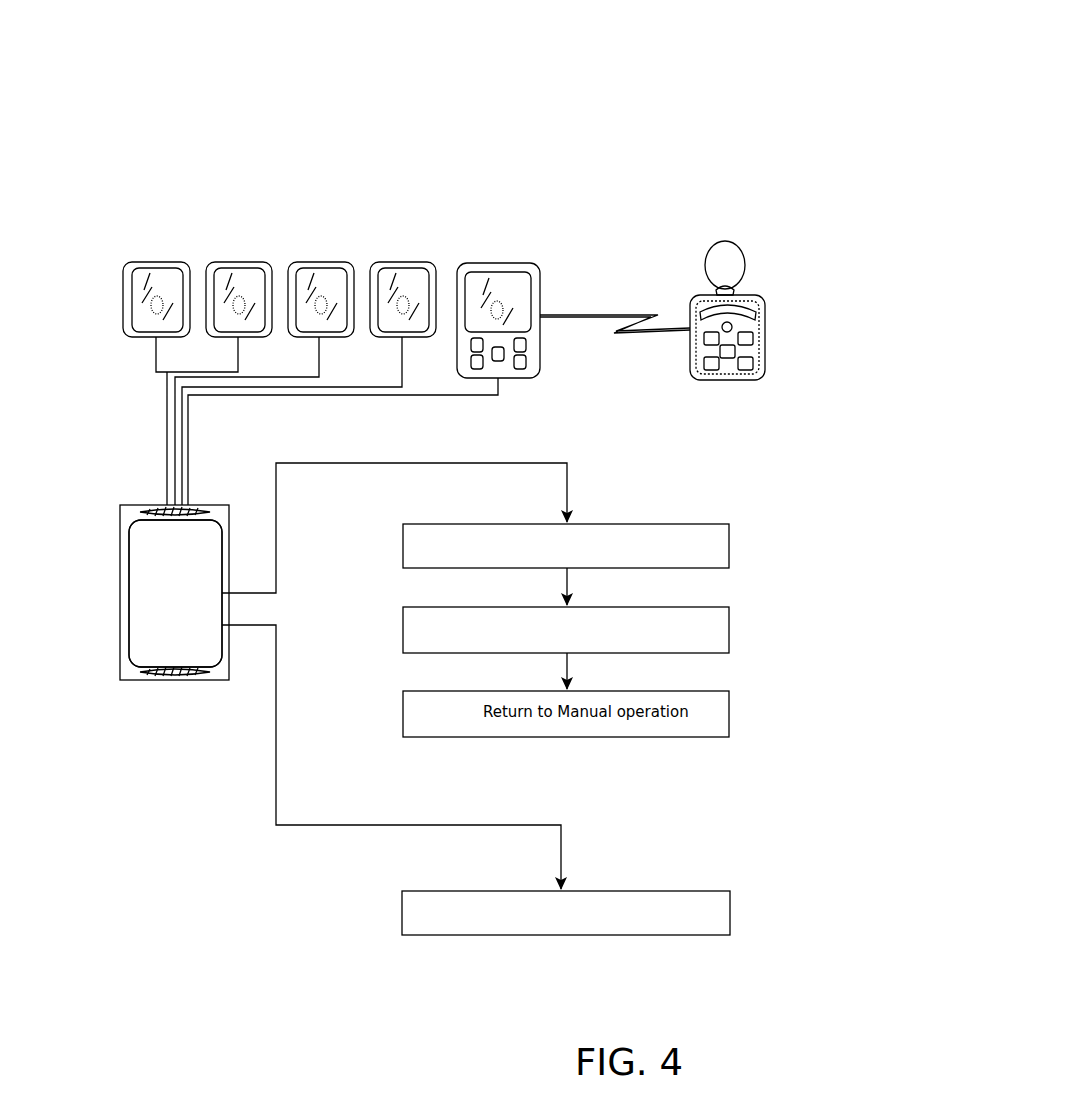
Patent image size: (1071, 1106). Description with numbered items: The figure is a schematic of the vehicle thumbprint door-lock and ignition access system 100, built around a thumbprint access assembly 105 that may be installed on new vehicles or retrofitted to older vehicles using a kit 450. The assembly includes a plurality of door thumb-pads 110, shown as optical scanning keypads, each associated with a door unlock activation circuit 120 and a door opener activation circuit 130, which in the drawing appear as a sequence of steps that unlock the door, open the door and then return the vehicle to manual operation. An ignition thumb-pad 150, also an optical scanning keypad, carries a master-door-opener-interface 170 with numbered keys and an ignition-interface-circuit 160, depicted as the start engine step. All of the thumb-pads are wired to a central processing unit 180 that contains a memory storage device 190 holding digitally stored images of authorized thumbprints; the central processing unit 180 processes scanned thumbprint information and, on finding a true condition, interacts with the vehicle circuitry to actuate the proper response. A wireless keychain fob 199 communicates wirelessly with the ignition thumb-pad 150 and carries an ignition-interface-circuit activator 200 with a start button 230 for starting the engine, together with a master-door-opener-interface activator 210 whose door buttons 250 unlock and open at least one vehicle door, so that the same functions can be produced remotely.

The vehicle thumbprint door-lock and ignition access system 100 is at (562, 70).
The thumbprint access assembly 105 is at (588, 116).
The kit 450 is at (613, 166).
The door thumb-pad 110 is at (152, 256).
The ignition thumb-pad 150 is at (547, 319).
The door buttons 250 is at (532, 345).
The master-door-opener-interface 170 is at (505, 366).
The central processing unit 180 is at (125, 551).
The memory storage device 190 is at (125, 593).
The ignition-interface-circuit activator 200 is at (748, 302).
The start button 230 is at (763, 314).
The master-door-opener-interface activator 210 is at (770, 350).
The wireless keychain fob 199 is at (773, 342).
The door unlock activation circuit 120 is at (566, 546).
The door opener activation circuit 130 is at (566, 630).
The ignition-interface-circuit 160 is at (566, 913).